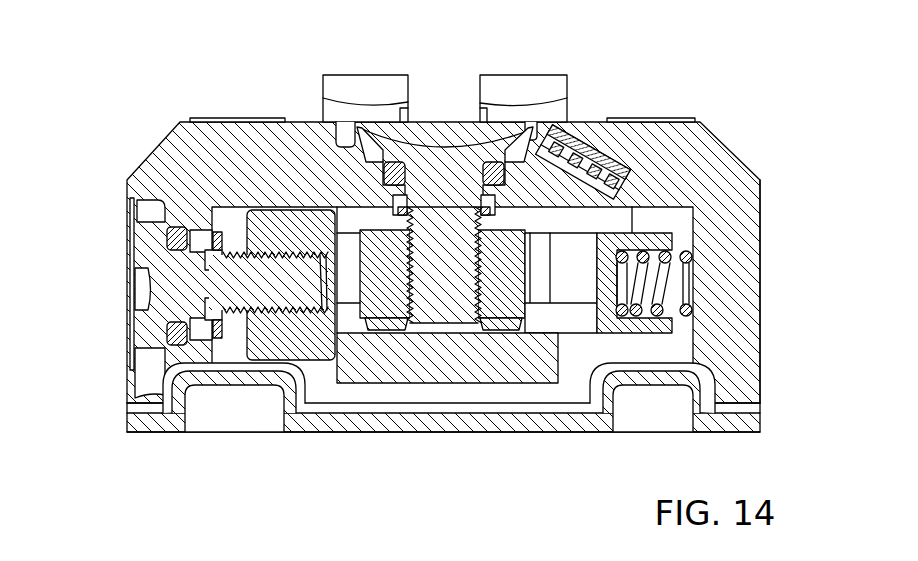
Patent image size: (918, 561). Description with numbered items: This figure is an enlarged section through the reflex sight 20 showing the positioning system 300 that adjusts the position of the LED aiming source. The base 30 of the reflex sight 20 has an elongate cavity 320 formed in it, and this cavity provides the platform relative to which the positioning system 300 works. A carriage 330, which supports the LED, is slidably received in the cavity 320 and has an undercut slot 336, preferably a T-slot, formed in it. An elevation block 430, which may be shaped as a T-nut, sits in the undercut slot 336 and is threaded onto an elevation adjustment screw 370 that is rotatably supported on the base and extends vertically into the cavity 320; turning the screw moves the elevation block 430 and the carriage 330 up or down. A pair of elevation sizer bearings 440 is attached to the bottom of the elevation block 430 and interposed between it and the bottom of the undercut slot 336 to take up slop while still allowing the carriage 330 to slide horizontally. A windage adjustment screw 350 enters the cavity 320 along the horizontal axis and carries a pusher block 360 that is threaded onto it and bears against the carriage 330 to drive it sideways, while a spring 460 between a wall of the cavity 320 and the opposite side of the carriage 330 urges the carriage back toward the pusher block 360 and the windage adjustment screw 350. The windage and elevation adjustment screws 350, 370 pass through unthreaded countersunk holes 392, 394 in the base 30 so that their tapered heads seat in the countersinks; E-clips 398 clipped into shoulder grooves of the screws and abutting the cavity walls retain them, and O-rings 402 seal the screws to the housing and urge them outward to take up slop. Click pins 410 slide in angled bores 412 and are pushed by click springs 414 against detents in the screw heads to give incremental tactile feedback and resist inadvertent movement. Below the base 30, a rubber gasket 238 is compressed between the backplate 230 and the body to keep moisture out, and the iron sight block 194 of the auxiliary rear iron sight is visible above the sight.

The reflex sight 20 is at (434, 255).
The base 30 is at (152, 162).
The iron sight block 194 is at (520, 78).
The backplate 230 is at (441, 424).
The rubber gasket 238 is at (150, 403).
The positioning system 300 is at (692, 226).
The elongate cavity 320 is at (658, 220).
The carriage 330 is at (430, 370).
The undercut slot 336 is at (573, 320).
The windage adjustment screw 350 is at (148, 252).
The pusher block 360 is at (283, 222).
The elevation adjustment screw 370 is at (437, 152).
The countersunk hole 392 is at (158, 351).
The countersunk hole 394 is at (337, 145).
The E-clip 398 is at (228, 232).
The O-ring 402 is at (167, 232).
The click pin 410 is at (590, 153).
The angled bore 412 is at (562, 138).
The click spring 414 is at (614, 168).
The elevation block 430 is at (486, 259).
The elevation sizer bearing 440 is at (387, 325).
The spring 460 is at (640, 300).